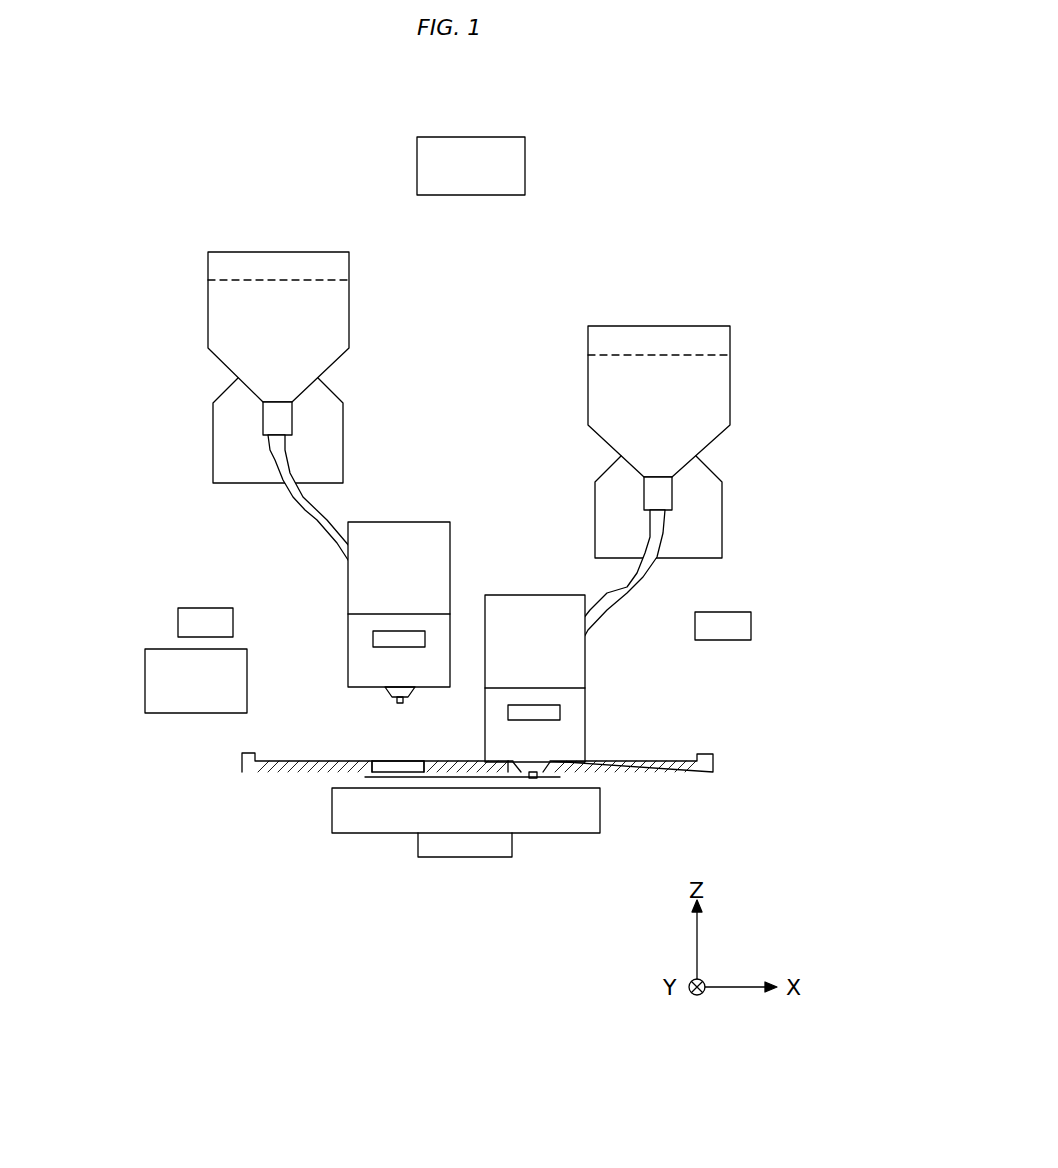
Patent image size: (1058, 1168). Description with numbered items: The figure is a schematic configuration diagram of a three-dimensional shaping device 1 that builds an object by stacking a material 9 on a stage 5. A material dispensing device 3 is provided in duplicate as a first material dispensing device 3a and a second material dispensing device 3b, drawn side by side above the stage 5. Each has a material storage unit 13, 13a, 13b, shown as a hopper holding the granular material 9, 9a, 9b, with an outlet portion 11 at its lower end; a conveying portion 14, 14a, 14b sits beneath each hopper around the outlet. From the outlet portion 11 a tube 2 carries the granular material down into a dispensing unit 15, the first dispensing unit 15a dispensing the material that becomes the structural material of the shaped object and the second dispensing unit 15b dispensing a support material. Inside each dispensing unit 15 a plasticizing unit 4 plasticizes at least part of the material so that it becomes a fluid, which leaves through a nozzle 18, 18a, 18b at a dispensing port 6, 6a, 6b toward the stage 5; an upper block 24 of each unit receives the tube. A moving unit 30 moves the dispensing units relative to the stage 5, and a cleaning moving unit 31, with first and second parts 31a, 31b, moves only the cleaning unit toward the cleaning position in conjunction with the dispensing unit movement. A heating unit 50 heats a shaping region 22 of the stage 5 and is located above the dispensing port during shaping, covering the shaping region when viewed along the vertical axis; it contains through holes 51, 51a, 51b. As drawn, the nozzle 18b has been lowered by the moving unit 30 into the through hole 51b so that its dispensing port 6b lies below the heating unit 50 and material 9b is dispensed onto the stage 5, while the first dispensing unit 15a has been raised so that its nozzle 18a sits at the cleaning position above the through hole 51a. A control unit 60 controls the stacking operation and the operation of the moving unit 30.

The three-dimensional shaping device 1 is at (574, 211).
The tube 2 is at (322, 512).
The material dispensing device 3 is at (474, 431).
The first material dispensing device 3a is at (253, 399).
The second material dispensing device 3b is at (719, 470).
The plasticizing unit 4 is at (373, 640).
The stage 5 is at (343, 805).
The dispensing port 6 is at (503, 752).
The dispensing port 6a is at (398, 710).
The dispensing port 6b is at (535, 778).
The material 9 is at (227, 329).
The material 9a is at (227, 329).
The material 9b is at (713, 362).
The outlet portion 11 is at (285, 417).
The material storage unit 13 is at (227, 370).
The material storage unit 13a is at (217, 318).
The material storage unit 13b is at (717, 373).
The material conveying unit 14 is at (341, 430).
The first material conveying unit 14a is at (327, 433).
The second material conveying unit 14b is at (712, 503).
The dispensing unit 15 is at (231, 569).
The first dispensing unit 15a is at (357, 629).
The second dispensing unit 15b is at (527, 693).
The nozzle 18 is at (479, 712).
The nozzle 18a is at (383, 687).
The nozzle 18b is at (538, 760).
The shaping region 22 is at (365, 777).
The head unit 24 is at (353, 597).
The moving unit 30 is at (183, 717).
The cleaning moving unit 31 is at (468, 629).
The cleaning moving unit 31a is at (178, 615).
The cleaning moving unit 31b is at (751, 622).
The heating unit 50 is at (491, 827).
The through hole 51 is at (404, 862).
The through hole 51a is at (400, 768).
The through hole 51b is at (513, 768).
The control unit 60 is at (467, 137).